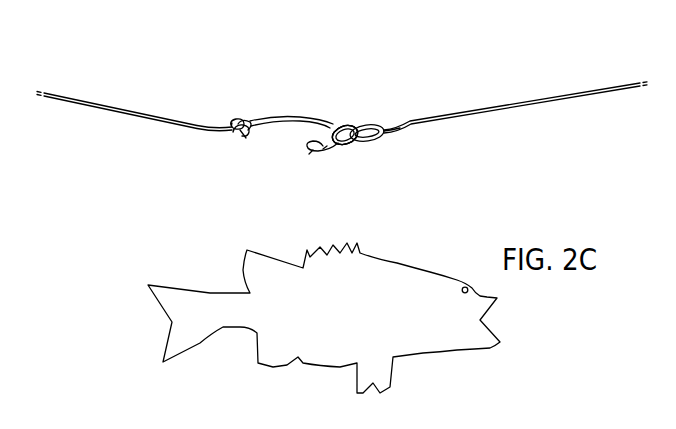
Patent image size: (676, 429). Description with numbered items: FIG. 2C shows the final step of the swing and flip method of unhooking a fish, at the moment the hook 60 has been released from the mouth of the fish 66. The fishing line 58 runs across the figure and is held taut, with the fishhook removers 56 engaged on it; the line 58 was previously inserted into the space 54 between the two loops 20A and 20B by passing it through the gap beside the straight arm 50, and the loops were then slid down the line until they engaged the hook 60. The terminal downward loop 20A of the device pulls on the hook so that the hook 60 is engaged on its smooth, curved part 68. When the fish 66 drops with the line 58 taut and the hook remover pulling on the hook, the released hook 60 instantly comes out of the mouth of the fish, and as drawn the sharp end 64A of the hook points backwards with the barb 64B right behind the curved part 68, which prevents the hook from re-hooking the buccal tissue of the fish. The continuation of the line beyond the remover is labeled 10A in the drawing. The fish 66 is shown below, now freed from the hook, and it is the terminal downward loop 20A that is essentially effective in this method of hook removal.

The line 58 is at (137, 112).
The hook 60 is at (282, 117).
The curved part of the hook 68 is at (340, 123).
The fishhook removers 56 is at (355, 108).
The space between the two loops 54 is at (366, 130).
The straight arm 50 is at (348, 141).
The terminal downward loop 20A is at (328, 134).
The sharp end of the hook 64A is at (314, 152).
The barb 64B is at (325, 150).
The loop 20B is at (383, 134).
The fishing line / leader 10A is at (552, 98).
The fish 66 is at (375, 292).